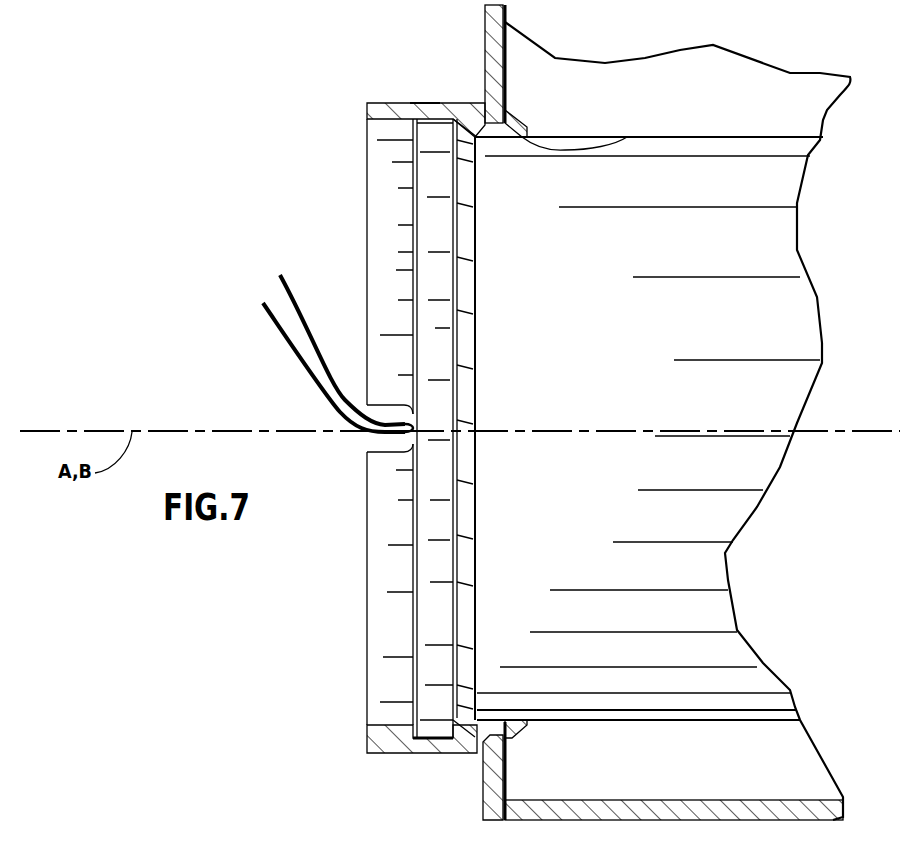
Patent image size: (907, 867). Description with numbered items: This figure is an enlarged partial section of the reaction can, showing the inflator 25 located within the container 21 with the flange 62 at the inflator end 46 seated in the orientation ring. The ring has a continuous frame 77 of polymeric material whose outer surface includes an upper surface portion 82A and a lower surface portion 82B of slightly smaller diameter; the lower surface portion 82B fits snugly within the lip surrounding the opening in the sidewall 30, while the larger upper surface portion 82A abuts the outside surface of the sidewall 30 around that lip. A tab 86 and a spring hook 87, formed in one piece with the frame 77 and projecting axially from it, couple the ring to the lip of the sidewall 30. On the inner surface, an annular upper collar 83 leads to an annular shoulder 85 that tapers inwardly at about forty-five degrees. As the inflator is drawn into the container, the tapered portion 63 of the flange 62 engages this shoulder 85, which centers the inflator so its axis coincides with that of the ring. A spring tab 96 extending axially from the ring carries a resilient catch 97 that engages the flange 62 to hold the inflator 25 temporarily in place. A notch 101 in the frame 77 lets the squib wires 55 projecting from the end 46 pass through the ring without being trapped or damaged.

The container 21 is at (472, 34).
The lower surface portion 82B is at (492, 118).
The inflator 25 is at (567, 125).
The spring hook 87 is at (627, 137).
The upper surface portion 82A is at (433, 104).
The upper collar 83 is at (380, 122).
The end 46 is at (411, 252).
The tapered portion 63 is at (477, 232).
The squib wires 55 is at (299, 358).
The notch 101 is at (393, 450).
The flange 62 is at (432, 551).
The shoulder 85 is at (441, 738).
The catch 97 is at (410, 720).
The spring tab 96 is at (362, 726).
The frame 77 is at (377, 753).
The sidewall 30 is at (483, 785).
The tab 86 is at (517, 737).